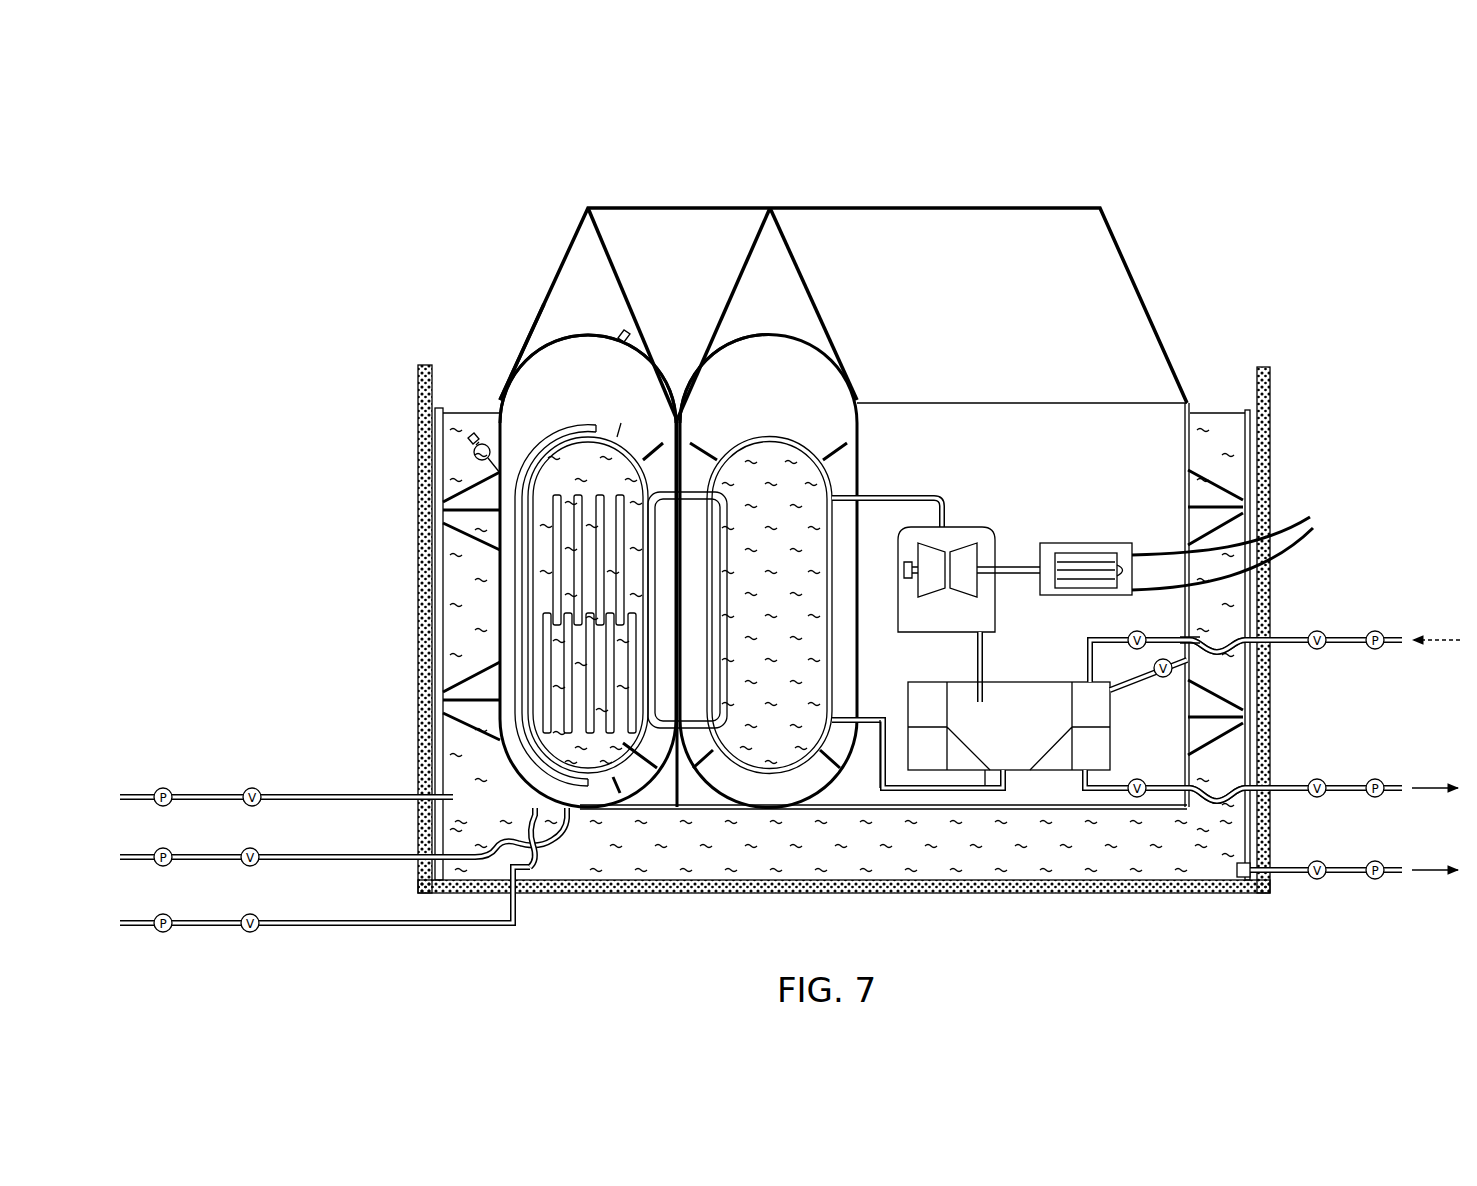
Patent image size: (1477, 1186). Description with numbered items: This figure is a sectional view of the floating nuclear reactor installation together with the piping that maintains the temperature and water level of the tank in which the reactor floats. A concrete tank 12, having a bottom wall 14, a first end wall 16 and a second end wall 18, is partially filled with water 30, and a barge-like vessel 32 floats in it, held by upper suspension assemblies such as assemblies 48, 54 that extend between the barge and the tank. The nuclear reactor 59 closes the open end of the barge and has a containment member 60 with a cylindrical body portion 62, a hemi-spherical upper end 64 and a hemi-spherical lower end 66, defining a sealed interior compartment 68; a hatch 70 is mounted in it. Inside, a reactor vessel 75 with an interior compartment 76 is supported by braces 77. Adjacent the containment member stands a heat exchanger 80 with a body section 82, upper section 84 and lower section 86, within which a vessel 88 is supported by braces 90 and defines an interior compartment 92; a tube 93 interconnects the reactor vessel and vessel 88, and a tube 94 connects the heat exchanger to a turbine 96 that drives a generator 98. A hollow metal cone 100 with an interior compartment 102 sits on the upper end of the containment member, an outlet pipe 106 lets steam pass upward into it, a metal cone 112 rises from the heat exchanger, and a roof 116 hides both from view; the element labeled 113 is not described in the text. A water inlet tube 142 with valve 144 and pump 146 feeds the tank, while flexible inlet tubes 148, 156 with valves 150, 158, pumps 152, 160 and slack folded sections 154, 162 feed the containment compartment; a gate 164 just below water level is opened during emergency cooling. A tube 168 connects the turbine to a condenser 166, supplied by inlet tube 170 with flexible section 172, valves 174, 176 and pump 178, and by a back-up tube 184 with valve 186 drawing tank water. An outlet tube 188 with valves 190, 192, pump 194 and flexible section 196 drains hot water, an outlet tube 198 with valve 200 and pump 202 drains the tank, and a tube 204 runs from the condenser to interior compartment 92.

The concrete tank 12 is at (1290, 402).
The bottom wall 14 is at (995, 888).
The first end wall 16 is at (1272, 573).
The second end wall 18 is at (422, 606).
The water 30 is at (617, 862).
The barge-like vessel 32 is at (992, 790).
The upper suspension assembly 48 is at (1230, 487).
The upper suspension assembly 54 is at (447, 512).
The nuclear reactor 59 is at (518, 388).
The containment member 60 is at (483, 413).
The cylindrical body portion 62 is at (528, 648).
The hemi-spherical upper end 64 is at (562, 325).
The hemi-spherical lower end 66 is at (591, 815).
The interior compartment 68 is at (633, 372).
The hatch 70 is at (513, 775).
The reactor vessel 75 is at (505, 770).
The interior compartment 76 is at (622, 752).
The braces 77 is at (646, 764).
The heat exchanger 80 is at (860, 387).
The body section 82 is at (845, 452).
The upper section 84 is at (790, 336).
The lower section 86 is at (887, 786).
The vessel 88 is at (836, 626).
The braces 90 is at (897, 783).
The interior compartment 92 is at (779, 738).
The tube 93 is at (688, 440).
The tube 94 is at (908, 498).
The turbine 96 is at (983, 536).
The generator 98 is at (1180, 645).
The hollow metal cone 100 is at (553, 262).
The interior compartment 102 is at (596, 263).
The outlet pipe 106 is at (631, 343).
The metal cone 112 is at (800, 246).
The containment dome 113 is at (778, 310).
The roof 116 is at (1020, 193).
The water inlet tube 142 is at (228, 790).
The valve 144 is at (253, 788).
The pump 146 is at (160, 788).
The flexible water inlet tube 148 is at (358, 866).
The valve 150 is at (248, 866).
The pump 152 is at (160, 865).
The flexible tubular section 154 is at (505, 850).
The flexible water inlet tube 156 is at (330, 932).
The valve 158 is at (250, 932).
The pump 160 is at (162, 932).
The flexible tubular section 162 is at (553, 870).
The gate 164 is at (474, 447).
The condenser 166 is at (1022, 725).
The tube 168 is at (998, 618).
The inlet tube 170 is at (1357, 625).
The flexible tubular section 172 is at (1226, 645).
The valve 174 is at (1127, 640).
The valve 176 is at (1330, 648).
The pump 178 is at (1382, 632).
The water inlet tube 184 is at (1232, 752).
The valve 186 is at (1232, 705).
The outlet tube 188 is at (1352, 788).
The valve 190 is at (1180, 800).
The valve 192 is at (1320, 796).
The pump 194 is at (1380, 796).
The flexible tubular section 196 is at (1232, 800).
The outlet tube 198 is at (1338, 878).
The valve 200 is at (1305, 877).
The pump 202 is at (1385, 878).
The tube 204 is at (1065, 793).